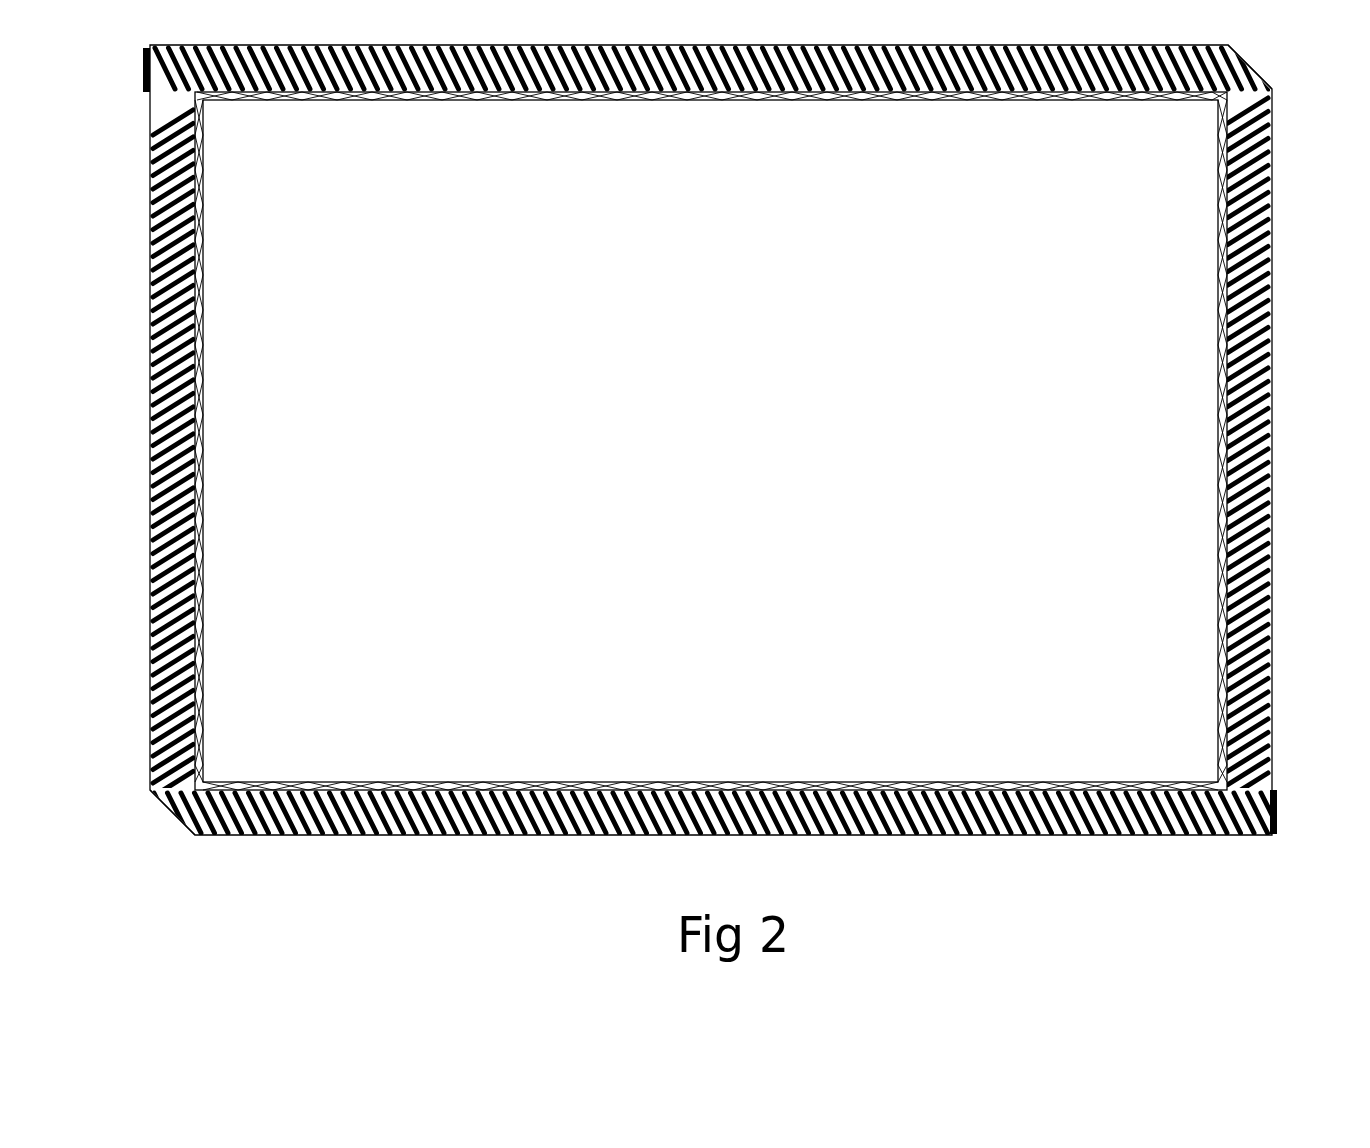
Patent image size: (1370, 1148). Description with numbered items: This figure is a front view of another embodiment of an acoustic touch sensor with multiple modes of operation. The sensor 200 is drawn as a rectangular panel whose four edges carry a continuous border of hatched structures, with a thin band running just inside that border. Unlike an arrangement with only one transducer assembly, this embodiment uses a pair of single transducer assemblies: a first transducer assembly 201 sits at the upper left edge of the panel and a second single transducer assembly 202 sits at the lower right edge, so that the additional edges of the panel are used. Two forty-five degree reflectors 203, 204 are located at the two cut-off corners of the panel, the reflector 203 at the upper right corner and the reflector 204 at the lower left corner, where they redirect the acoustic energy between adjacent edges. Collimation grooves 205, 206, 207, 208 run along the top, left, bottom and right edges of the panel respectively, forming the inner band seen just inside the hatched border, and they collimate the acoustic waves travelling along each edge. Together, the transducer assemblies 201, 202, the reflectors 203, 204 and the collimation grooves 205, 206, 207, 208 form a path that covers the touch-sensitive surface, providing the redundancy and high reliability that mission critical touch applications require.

The metal frame (antenna radiator) 200 is at (943, 745).
The transducer assembly 201 is at (142, 69).
The second single transducer assembly 202 is at (1278, 807).
The 45 degree reflector 203 is at (1247, 68).
The 45 degree reflector 204 is at (172, 815).
The collimation groove 205 is at (720, 98).
The collimation groove 206 is at (200, 430).
The collimation groove 207 is at (465, 790).
The collimation groove 208 is at (1227, 405).